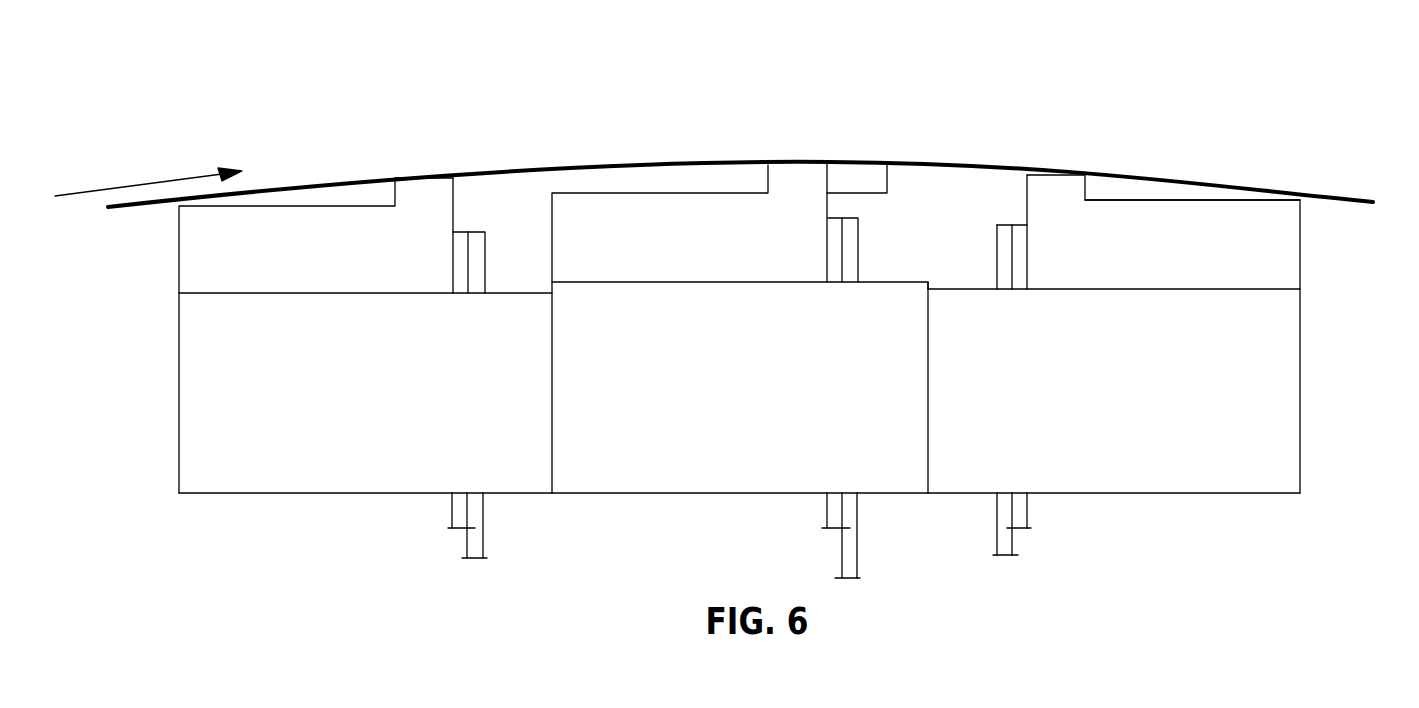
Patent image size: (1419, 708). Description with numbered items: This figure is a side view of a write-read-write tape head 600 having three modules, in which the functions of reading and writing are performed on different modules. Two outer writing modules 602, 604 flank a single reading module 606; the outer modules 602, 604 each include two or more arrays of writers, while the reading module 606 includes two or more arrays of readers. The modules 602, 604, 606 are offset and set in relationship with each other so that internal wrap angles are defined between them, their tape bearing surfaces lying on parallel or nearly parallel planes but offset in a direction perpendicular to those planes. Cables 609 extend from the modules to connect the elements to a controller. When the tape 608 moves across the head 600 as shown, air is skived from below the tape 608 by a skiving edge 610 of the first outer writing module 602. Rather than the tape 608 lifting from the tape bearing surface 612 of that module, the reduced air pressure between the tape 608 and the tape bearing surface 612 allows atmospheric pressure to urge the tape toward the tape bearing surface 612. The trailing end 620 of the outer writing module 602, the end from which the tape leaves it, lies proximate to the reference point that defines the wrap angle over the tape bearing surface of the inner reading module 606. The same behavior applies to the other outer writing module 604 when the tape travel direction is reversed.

The write-read-write head 600 is at (575, 130).
The first outer writing module 602 is at (178, 258).
The second outer writing module 604 is at (1301, 252).
The reading module 606 is at (707, 192).
The tape 608 is at (1158, 178).
The cables 609 is at (487, 519).
The skiving edge 610 is at (395, 176).
The tape bearing surface 612 is at (423, 176).
The trailing end 620 is at (455, 183).